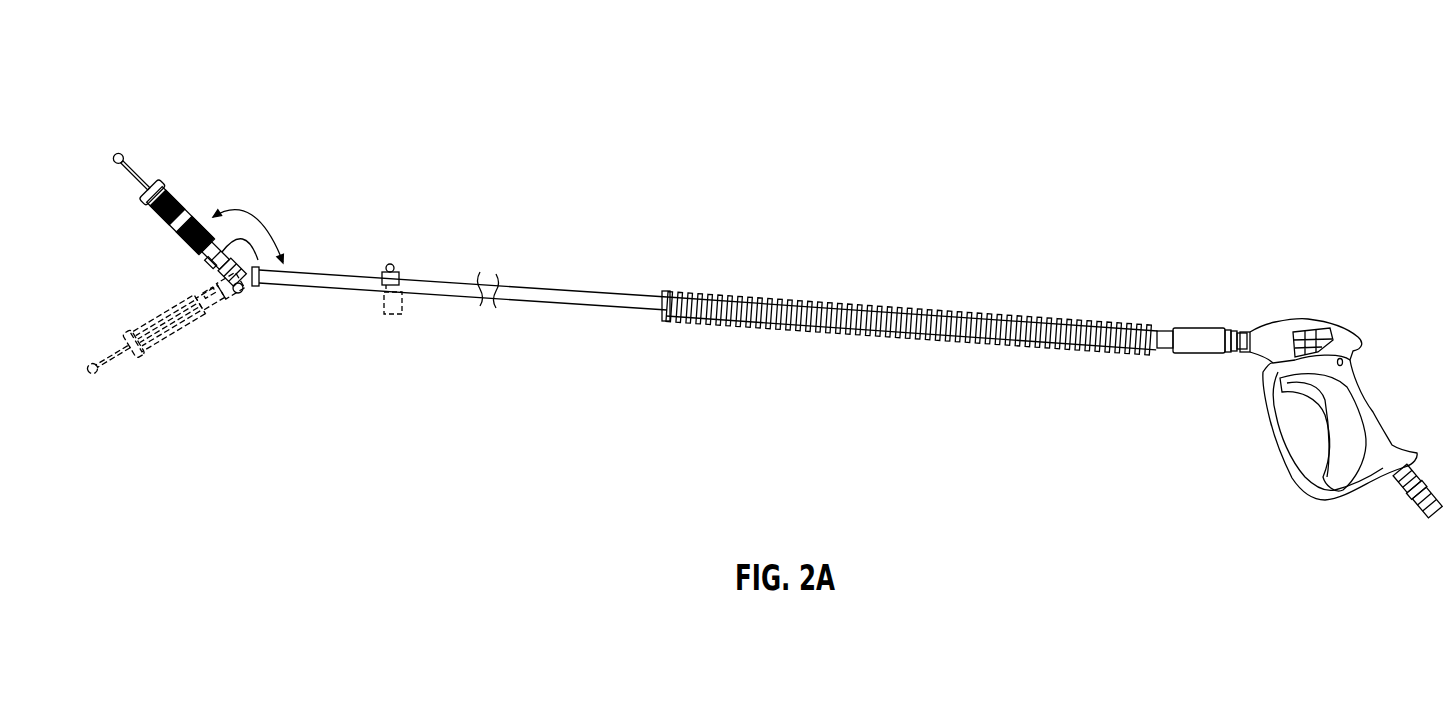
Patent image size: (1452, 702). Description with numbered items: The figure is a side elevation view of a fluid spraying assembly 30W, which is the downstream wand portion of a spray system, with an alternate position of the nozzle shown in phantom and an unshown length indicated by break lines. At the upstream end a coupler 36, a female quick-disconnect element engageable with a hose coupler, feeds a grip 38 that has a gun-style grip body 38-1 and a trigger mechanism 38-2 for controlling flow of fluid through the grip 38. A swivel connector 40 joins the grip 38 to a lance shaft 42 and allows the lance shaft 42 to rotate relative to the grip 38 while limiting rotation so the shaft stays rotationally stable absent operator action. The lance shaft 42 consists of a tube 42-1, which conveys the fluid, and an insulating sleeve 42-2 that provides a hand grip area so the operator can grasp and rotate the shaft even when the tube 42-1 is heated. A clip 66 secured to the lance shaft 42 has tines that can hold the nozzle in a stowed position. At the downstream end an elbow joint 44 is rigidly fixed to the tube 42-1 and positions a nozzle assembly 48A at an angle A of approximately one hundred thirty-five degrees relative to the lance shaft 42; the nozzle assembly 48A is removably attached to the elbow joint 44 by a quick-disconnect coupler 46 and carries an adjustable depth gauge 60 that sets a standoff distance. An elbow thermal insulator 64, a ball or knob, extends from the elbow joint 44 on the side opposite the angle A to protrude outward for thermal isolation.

The fluid spraying assembly 30W is at (1198, 58).
The depth gauge 60 is at (115, 146).
The nozzle assembly 48A is at (144, 213).
The coupler 46 is at (208, 257).
The elbow joint 44 is at (253, 283).
The elbow thermal insulator 64 is at (232, 300).
The angle A is at (281, 254).
The clip 66 is at (383, 263).
The lance shaft 42 is at (553, 272).
The tube 42-1 is at (655, 297).
The insulating sleeve 42-2 is at (1013, 317).
The swivel connector 40 is at (1197, 338).
The grip 38 is at (1367, 367).
The gun-style grip body 38-1 is at (1340, 327).
The trigger mechanism 38-2 is at (1323, 430).
The coupler 36 is at (1397, 500).